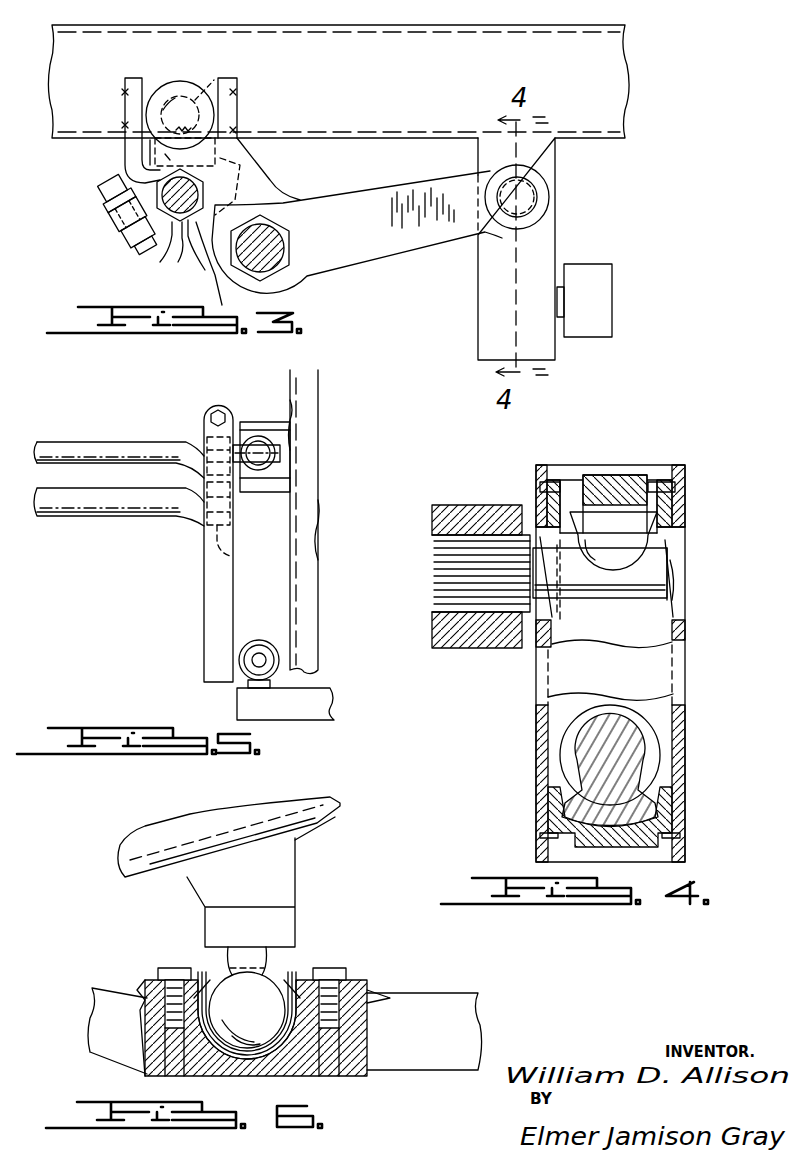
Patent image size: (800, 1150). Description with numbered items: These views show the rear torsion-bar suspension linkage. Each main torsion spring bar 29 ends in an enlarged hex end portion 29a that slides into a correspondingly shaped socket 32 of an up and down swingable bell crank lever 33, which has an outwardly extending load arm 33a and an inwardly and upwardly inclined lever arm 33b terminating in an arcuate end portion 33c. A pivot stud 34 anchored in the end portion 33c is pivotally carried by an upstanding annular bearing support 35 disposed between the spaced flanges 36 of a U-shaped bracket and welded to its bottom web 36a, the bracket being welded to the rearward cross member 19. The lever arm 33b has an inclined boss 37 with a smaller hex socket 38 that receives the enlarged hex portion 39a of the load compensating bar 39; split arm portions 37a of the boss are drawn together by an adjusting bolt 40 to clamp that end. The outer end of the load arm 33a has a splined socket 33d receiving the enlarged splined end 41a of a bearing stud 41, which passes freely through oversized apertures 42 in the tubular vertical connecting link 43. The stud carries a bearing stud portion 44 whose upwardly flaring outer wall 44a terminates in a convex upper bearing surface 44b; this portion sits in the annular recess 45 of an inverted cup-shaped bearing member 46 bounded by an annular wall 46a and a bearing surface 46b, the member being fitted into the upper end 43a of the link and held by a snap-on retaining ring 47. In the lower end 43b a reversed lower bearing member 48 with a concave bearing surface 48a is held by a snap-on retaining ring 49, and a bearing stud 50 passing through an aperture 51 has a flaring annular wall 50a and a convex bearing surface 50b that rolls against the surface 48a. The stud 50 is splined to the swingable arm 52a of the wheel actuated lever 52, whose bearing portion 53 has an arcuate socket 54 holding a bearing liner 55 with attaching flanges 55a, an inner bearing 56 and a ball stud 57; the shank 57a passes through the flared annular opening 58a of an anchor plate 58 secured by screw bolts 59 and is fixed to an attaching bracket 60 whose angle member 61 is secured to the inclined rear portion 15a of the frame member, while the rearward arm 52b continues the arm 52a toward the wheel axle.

In FIG. 6, the upwardly inclined rear portion 15a is at (265, 805).
In FIG. 3, the rearward cross member 19 is at (442, 64).
In FIG. 5, the rearward cross member 19 is at (306, 473).
In FIG. 3, the main torsion spring bar 29 is at (272, 262).
In FIG. 5, the main torsion spring bar 29 is at (56, 506).
In FIG. 3, the enlarged hex end portion 29a is at (292, 248).
In FIG. 5, the enlarged hex end portion 29a is at (212, 512).
In FIG. 3, the socket 32 is at (282, 218).
In FIG. 5, the socket 32 is at (230, 556).
In FIG. 5, the bell crank lever 33 is at (228, 500).
In FIG. 3, the load arm 33a is at (400, 234).
In FIG. 5, the load arm 33a is at (208, 617).
In FIG. 4, the load arm 33a is at (476, 508).
In FIG. 3, the lever arm 33b is at (248, 175).
In FIG. 5, the lever arm 33b is at (215, 488).
In FIG. 3, the arcuate end portion 33c is at (180, 82).
In FIG. 5, the arcuate end portion 33c is at (205, 458).
In FIG. 3, the splined socket 33d is at (522, 225).
In FIG. 4, the splined socket 33d is at (462, 648).
In FIG. 3, the pivot stud 34 is at (216, 76).
In FIG. 5, the pivot stud 34 is at (270, 445).
In FIG. 3, the annular bearing support 35 is at (150, 150).
In FIG. 5, the annular bearing support 35 is at (250, 442).
In FIG. 3, the flanges 36 is at (238, 100).
In FIG. 5, the flanges 36 is at (280, 428).
In FIG. 3, the bottom web 36a is at (238, 187).
In FIG. 5, the bottom web 36a is at (285, 452).
In FIG. 3, the boss 37 is at (120, 184).
In FIG. 3, the split arm portions 37a is at (112, 228).
In FIG. 3, the hex socket 38 is at (192, 245).
In FIG. 3, the load compensating bar 39 is at (175, 240).
In FIG. 5, the load compensating bar 39 is at (75, 444).
In FIG. 3, the enlarged hex portion 39a is at (212, 272).
In FIG. 5, the enlarged hex portion 39a is at (198, 436).
In FIG. 3, the adjusting bolt 40 is at (104, 202).
In FIG. 5, the adjusting bolt 40 is at (220, 410).
In FIG. 3, the bearing stud 41 is at (525, 200).
In FIG. 5, the bearing stud 41 is at (242, 652).
In FIG. 4, the bearing stud 41 is at (620, 591).
In FIG. 4, the enlarged splined end 41a is at (440, 575).
In FIG. 4, the apertures 42 is at (562, 612).
In FIG. 3, the connecting link 43 is at (557, 243).
In FIG. 5, the connecting link 43 is at (274, 648).
In FIG. 4, the connecting link 43 is at (698, 720).
In FIG. 4, the upper end 43a is at (682, 492).
In FIG. 4, the lower end 43b is at (680, 806).
In FIG. 4, the bearing stud portion 44 is at (630, 540).
In FIG. 4, the flaring outer wall 44a is at (580, 548).
In FIG. 4, the convex upper bearing surface 44b is at (616, 505).
In FIG. 4, the annular recess 45 is at (660, 520).
In FIG. 4, the bearing member 46 is at (648, 480).
In FIG. 4, the annular wall 46a is at (668, 545).
In FIG. 4, the bearing surface 46b is at (582, 500).
In FIG. 4, the snap-on retaining ring 47 is at (674, 476).
In FIG. 4, the lower bearing member 48 is at (556, 824).
In FIG. 4, the concave bearing surface 48a is at (662, 802).
In FIG. 4, the snap-on retaining ring 49 is at (668, 840).
In FIG. 3, the bearing stud 50 is at (565, 292).
In FIG. 5, the bearing stud 50 is at (280, 686).
In FIG. 4, the bearing stud 50 is at (640, 752).
In FIG. 4, the flaring annular wall 50a is at (570, 797).
In FIG. 4, the convex bearing surface 50b is at (578, 818).
In FIG. 4, the aperture 51 is at (640, 715).
In FIG. 5, the wheel actuated lever 52 is at (338, 704).
In FIG. 6, the wheel actuated lever 52 is at (212, 1080).
In FIG. 3, the swingable arm 52a is at (600, 308).
In FIG. 5, the swingable arm 52a is at (242, 702).
In FIG. 6, the swingable arm 52a is at (110, 1000).
In FIG. 6, the arm 52b is at (440, 1003).
In FIG. 6, the bearing portion 53 is at (358, 994).
In FIG. 6, the arcuate socket 54 is at (285, 1050).
In FIG. 6, the bearing liner 55 is at (300, 1045).
In FIG. 6, the attaching flanges 55a is at (160, 990).
In FIG. 6, the inner bearing 56 is at (216, 1044).
In FIG. 6, the ball stud 57 is at (290, 970).
In FIG. 6, the shank 57a is at (270, 975).
In FIG. 6, the anchor plate 58 is at (293, 978).
In FIG. 6, the annular opening 58a is at (282, 972).
In FIG. 6, the screw bolts 59 is at (332, 972).
In FIG. 6, the attaching bracket 60 is at (282, 875).
In FIG. 6, the angle member 61 is at (312, 833).